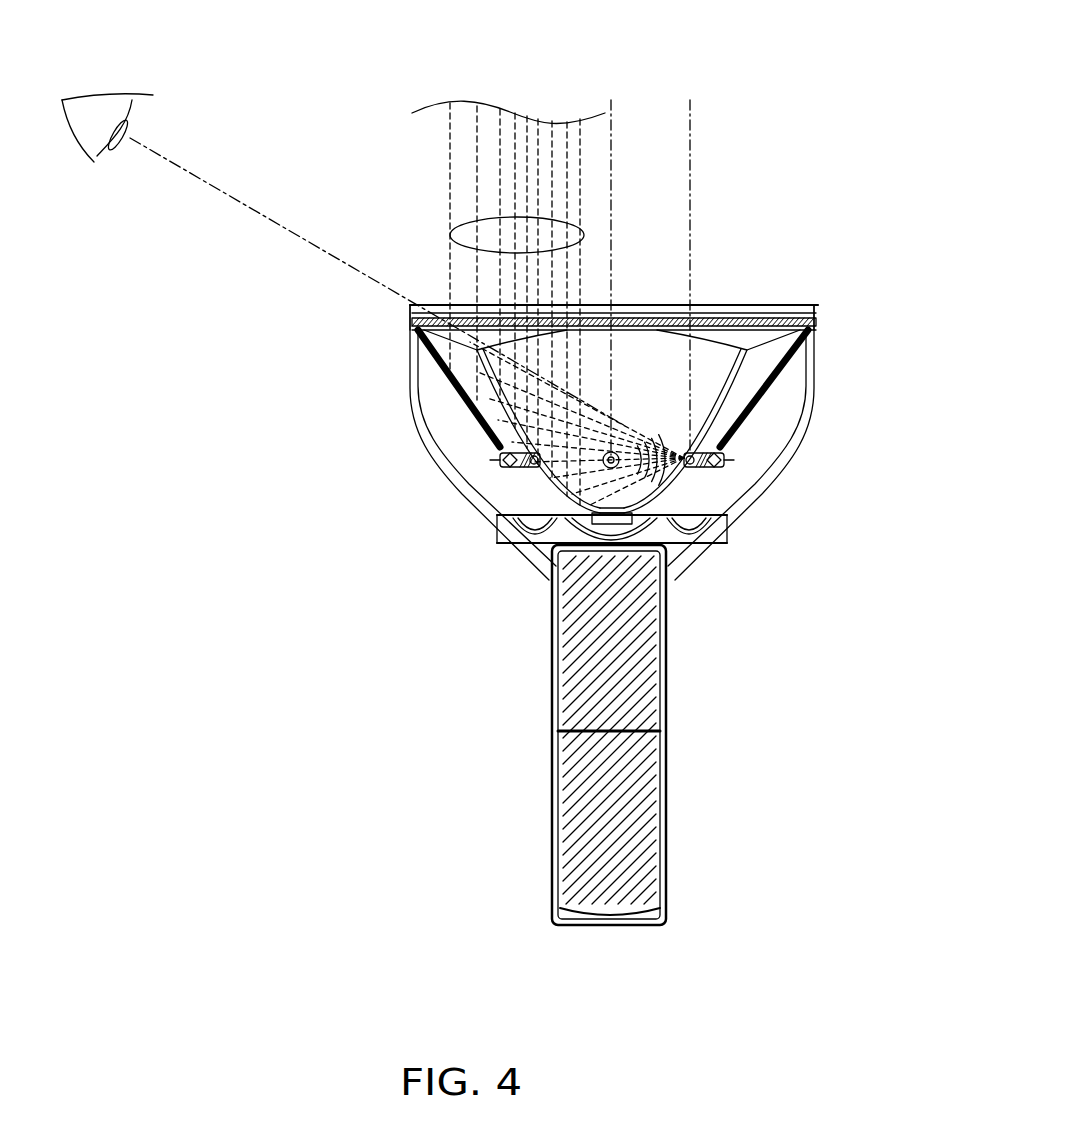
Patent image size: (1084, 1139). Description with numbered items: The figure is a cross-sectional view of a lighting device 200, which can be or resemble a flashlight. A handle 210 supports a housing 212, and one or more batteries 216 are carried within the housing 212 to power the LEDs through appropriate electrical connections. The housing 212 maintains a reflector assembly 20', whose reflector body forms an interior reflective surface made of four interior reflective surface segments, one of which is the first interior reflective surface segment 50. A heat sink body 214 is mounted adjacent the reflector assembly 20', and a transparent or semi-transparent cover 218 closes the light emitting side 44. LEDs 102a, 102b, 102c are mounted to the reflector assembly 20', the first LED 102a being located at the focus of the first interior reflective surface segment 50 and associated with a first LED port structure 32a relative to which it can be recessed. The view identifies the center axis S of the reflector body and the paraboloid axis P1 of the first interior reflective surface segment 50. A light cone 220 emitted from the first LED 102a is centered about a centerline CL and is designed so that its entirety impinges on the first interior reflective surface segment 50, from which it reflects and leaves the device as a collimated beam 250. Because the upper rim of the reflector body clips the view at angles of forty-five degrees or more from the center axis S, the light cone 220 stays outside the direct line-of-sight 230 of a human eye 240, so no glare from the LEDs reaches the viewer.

The lighting device 200 is at (822, 116).
The handle 210 is at (546, 807).
The housing 212 is at (416, 405).
The heat sink body 214 is at (498, 545).
The batteries 216 is at (640, 676).
The cover 218 is at (745, 305).
The light cone 220 is at (628, 426).
The line-of-sight 230 is at (225, 193).
The human eye 240 is at (80, 150).
The collimated beam 250 is at (456, 225).
The light emitting side 44 is at (818, 300).
The first interior reflective surface segment 50 is at (466, 360).
The reflector assembly 20' is at (816, 402).
The first LED port structure 32a is at (737, 467).
The first LED 102a is at (723, 480).
The LED 102b is at (623, 463).
The LED 102c is at (491, 473).
The centerline CL is at (471, 446).
The center axis S is at (613, 142).
The paraboloid axis P1 is at (690, 180).